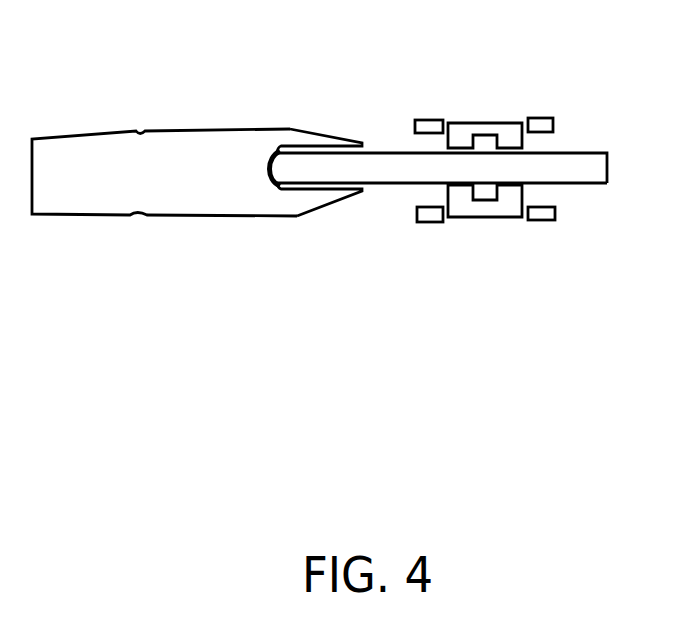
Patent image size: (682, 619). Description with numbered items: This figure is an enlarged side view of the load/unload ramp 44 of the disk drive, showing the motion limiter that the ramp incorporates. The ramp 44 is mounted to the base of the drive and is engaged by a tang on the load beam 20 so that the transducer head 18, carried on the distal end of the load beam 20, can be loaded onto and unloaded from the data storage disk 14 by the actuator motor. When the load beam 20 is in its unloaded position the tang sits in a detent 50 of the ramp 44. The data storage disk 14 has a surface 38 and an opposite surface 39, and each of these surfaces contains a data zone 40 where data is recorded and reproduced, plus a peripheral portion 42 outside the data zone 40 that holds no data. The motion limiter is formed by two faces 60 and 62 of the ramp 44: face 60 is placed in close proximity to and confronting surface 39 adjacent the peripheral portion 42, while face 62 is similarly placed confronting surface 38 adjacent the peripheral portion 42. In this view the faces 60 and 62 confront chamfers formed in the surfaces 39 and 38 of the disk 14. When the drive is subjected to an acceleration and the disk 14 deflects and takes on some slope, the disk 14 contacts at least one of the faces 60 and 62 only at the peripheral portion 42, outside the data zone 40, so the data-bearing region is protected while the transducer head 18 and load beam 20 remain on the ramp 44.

The data storage disk 14 is at (452, 178).
The transducer head 18 is at (463, 123).
The load beam 20 is at (540, 119).
The surface 38 is at (372, 152).
The opposite surface 39 is at (372, 186).
The data zone 40 is at (444, 178).
The peripheral portion 42 is at (287, 163).
The load/unload ramp 44 is at (199, 210).
The detent 50 is at (141, 132).
The face 60 is at (277, 188).
The face 62 is at (244, 179).